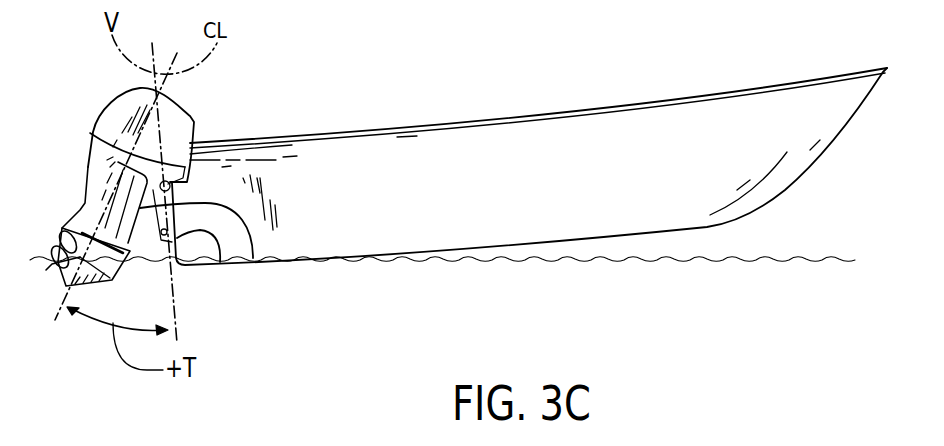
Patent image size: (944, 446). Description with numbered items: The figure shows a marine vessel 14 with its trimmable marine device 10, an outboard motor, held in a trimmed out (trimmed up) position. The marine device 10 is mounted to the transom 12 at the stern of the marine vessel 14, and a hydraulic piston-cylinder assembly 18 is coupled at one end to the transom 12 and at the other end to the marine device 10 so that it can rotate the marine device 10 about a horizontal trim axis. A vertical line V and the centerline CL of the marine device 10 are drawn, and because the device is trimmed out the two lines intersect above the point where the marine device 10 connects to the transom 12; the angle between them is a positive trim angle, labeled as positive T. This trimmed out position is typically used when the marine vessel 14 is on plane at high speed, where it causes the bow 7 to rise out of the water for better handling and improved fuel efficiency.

The bow 7 is at (833, 146).
The trimmable marine device 10 is at (95, 127).
The transom 12 is at (220, 262).
The marine vessel 14 is at (684, 96).
The hydraulic piston-cylinder assembly 18 is at (253, 258).